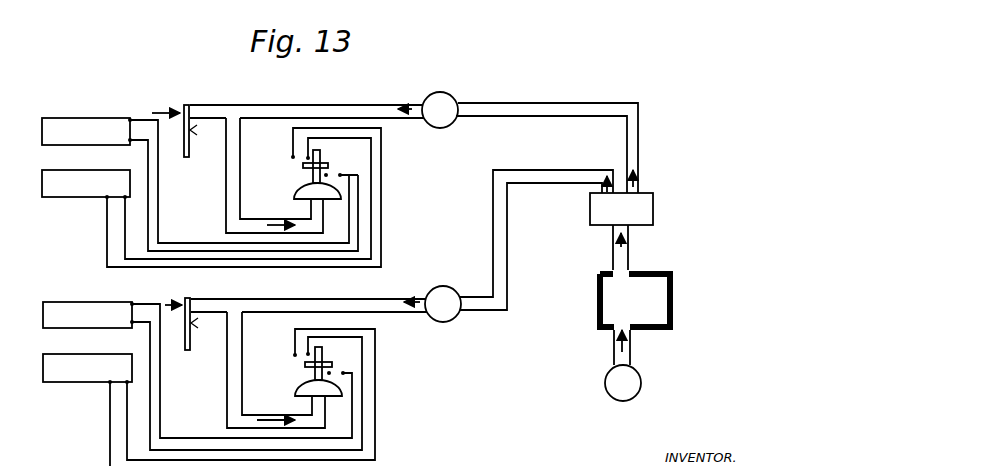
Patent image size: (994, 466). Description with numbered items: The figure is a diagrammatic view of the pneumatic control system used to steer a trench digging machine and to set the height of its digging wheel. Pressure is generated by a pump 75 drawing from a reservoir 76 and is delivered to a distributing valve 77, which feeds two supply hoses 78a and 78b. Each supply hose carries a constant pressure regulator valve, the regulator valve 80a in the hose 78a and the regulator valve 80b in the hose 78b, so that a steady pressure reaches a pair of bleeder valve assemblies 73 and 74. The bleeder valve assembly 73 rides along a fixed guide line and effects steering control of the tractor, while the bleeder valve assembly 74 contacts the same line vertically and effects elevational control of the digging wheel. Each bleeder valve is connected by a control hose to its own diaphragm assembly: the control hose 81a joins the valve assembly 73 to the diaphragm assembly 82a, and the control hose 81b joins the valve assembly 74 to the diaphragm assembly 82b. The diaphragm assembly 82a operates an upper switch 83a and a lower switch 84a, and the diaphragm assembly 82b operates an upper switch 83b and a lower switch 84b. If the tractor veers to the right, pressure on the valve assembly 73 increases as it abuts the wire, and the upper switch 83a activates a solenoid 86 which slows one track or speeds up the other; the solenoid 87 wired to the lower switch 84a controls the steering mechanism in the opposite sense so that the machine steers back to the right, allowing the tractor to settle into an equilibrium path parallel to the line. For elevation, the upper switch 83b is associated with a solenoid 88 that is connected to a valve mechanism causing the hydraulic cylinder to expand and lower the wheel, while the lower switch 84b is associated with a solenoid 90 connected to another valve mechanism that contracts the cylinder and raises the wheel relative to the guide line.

The bleeder valve assembly 73 is at (188, 103).
The bleeder valve assembly 74 is at (192, 298).
The pump 75 is at (610, 398).
The reservoir 76 is at (605, 312).
The distributing valve 77 is at (592, 213).
The supply hose 78a is at (508, 104).
The supply hose 78b is at (496, 172).
The constant pressure regulator valve 80a is at (427, 92).
The constant pressure regulator valve 80b is at (432, 284).
The control hose 81a is at (238, 193).
The control hose 81b is at (237, 363).
The diaphragm assembly 82a is at (298, 190).
The diaphragm assembly 82b is at (305, 382).
The upper switch 83a is at (292, 157).
The upper switch 83b is at (296, 354).
The lower switch 84a is at (332, 172).
The lower switch 84b is at (332, 371).
The solenoid 86 is at (43, 197).
The solenoid 87 is at (51, 122).
The solenoid 88 is at (45, 383).
The solenoid 90 is at (45, 329).